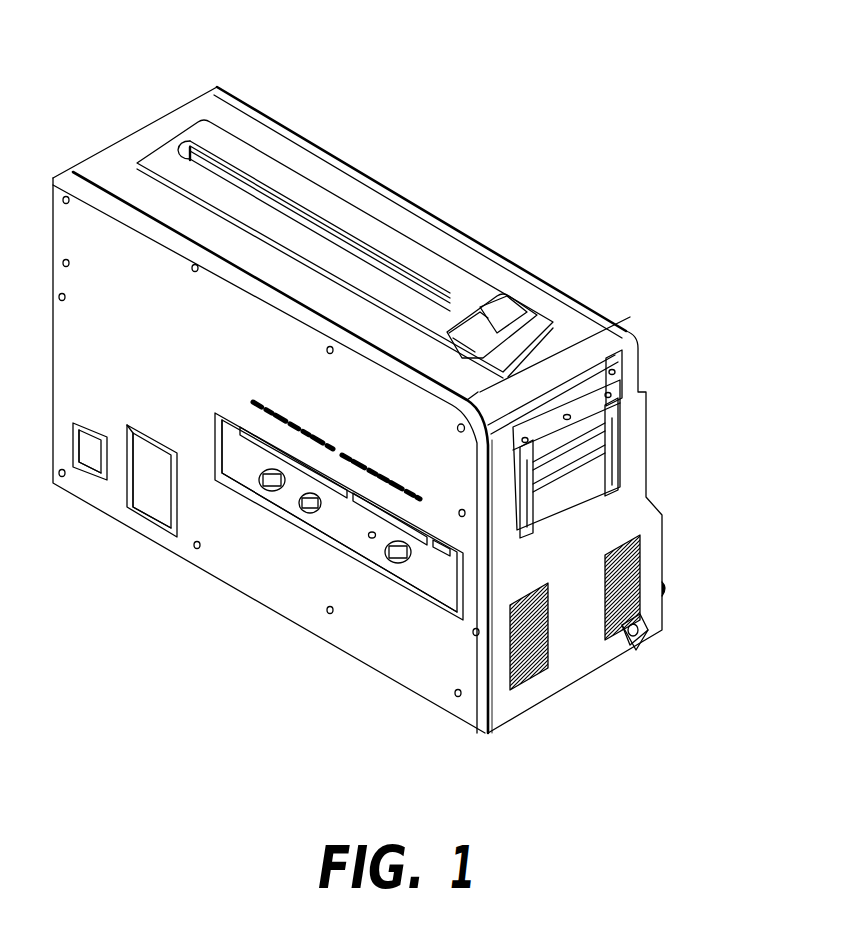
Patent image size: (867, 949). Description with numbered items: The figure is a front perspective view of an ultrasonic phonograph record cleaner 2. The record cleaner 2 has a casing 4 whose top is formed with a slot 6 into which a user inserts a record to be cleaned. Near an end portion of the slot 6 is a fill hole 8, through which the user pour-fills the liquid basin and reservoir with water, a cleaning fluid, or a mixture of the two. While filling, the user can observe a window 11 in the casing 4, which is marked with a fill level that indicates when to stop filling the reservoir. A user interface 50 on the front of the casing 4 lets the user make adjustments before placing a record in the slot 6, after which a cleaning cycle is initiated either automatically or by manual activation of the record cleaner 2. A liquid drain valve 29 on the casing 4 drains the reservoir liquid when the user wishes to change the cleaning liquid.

The record cleaner 2 is at (558, 146).
The casing 4 is at (627, 330).
The slot 6 is at (402, 272).
The fill hole 8 is at (490, 327).
The window 11 is at (157, 490).
The user interface 50 is at (343, 513).
The liquid drain valve 29 is at (645, 630).